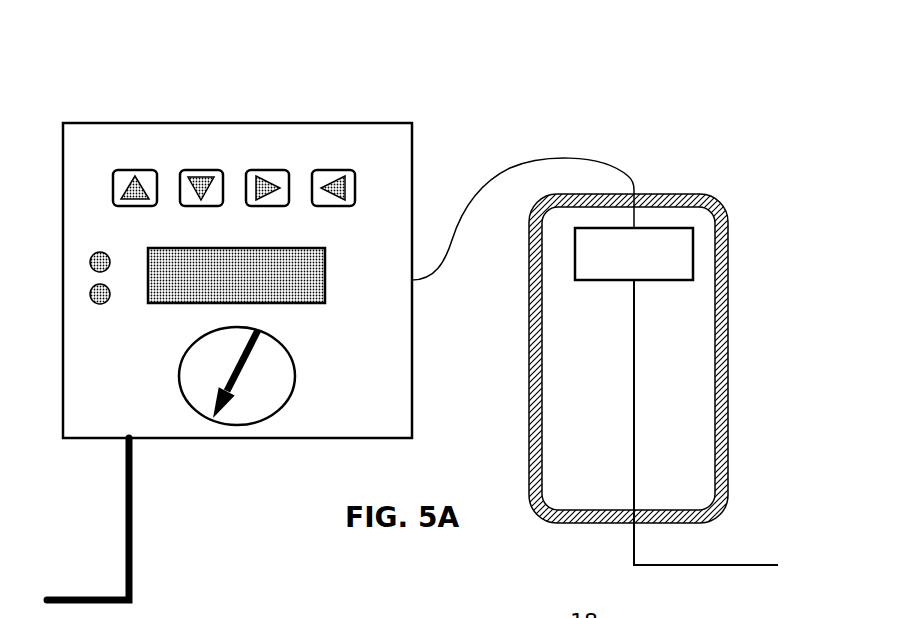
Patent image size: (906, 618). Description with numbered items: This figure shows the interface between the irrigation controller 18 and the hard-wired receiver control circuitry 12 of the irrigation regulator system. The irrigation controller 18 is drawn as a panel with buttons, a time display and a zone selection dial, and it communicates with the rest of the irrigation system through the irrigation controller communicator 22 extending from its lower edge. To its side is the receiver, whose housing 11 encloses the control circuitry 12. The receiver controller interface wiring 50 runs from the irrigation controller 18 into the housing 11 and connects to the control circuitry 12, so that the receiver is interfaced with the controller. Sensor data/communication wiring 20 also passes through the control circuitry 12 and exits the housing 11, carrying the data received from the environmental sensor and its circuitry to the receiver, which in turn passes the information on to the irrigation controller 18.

The irrigation controller 18 is at (290, 107).
The irrigation controller communicator 22 is at (88, 519).
The receiver controller interface wiring 50 is at (549, 155).
The housing 11 is at (712, 166).
The control circuitry 12 is at (680, 262).
The sensor data/communication wiring 20 is at (706, 422).